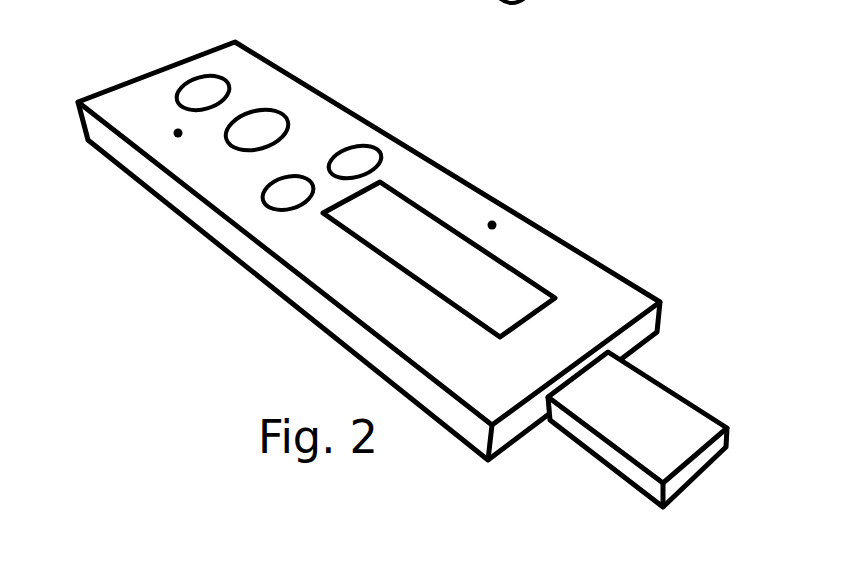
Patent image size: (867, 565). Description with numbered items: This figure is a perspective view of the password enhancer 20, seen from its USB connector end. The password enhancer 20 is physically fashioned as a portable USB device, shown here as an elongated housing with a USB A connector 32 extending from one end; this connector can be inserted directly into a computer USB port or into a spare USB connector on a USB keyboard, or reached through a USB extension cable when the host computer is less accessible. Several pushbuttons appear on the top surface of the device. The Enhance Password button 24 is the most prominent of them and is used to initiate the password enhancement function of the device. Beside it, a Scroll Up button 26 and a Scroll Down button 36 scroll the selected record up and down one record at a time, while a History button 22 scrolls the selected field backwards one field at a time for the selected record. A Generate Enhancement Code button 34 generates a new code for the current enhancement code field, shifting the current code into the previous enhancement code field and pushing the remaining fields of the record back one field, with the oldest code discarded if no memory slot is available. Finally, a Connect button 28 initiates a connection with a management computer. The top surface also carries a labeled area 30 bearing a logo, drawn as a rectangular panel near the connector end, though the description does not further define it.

The password enhancer 20 is at (124, 56).
The History button 22 is at (212, 88).
The Enhance Password button 24 is at (273, 127).
The Scroll Up button 26 is at (365, 157).
The Connect button 28 is at (492, 225).
The logo label area 30 is at (517, 304).
The USB A connector 32 is at (677, 420).
The Generate Enhancement Code button 34 is at (178, 133).
The Scroll Down button 36 is at (273, 198).